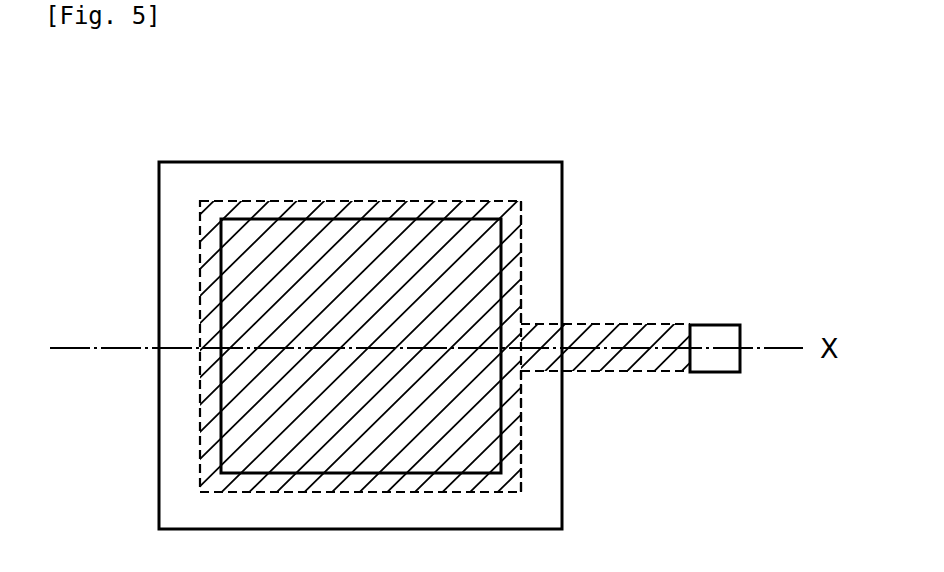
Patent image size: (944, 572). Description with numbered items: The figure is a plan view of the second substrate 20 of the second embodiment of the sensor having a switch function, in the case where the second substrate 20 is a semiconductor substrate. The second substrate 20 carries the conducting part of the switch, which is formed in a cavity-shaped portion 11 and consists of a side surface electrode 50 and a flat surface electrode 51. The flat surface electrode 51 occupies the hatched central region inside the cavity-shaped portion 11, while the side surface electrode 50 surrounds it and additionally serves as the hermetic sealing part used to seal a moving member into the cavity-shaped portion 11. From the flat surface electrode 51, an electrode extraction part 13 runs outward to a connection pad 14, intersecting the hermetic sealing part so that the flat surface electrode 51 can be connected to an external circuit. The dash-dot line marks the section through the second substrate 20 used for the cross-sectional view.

The second substrate 20 is at (740, 88).
The cavity-shaped portion 11 is at (433, 235).
The electrode extraction part 13 is at (608, 325).
The connection pad 14 is at (713, 328).
The side surface electrode 50 is at (539, 495).
The flat surface electrode 51 is at (520, 307).